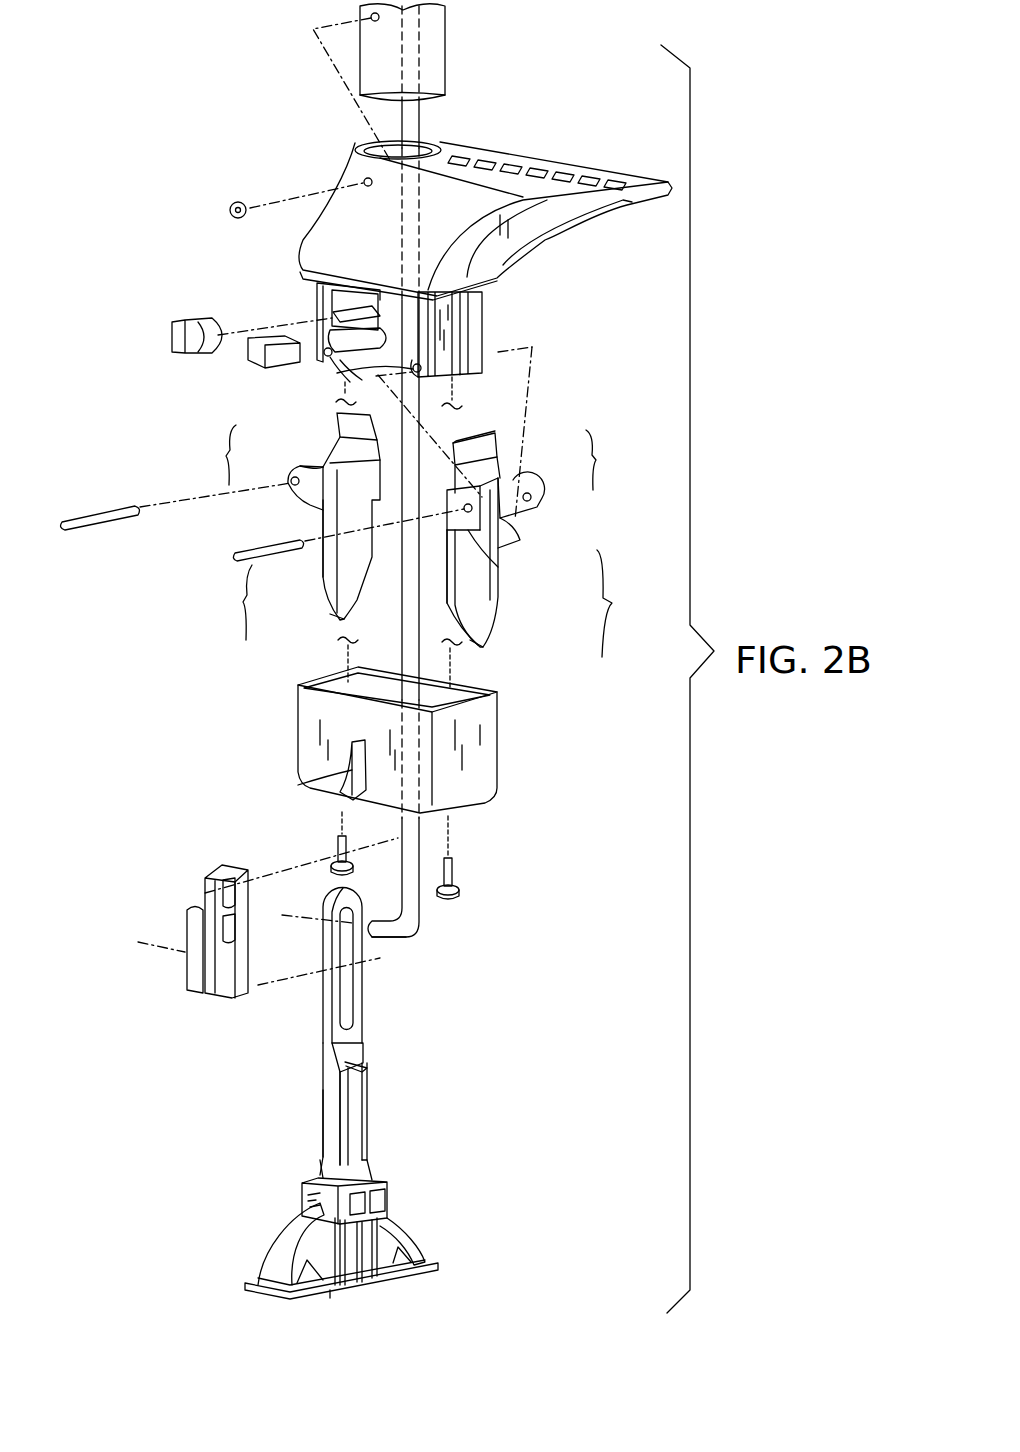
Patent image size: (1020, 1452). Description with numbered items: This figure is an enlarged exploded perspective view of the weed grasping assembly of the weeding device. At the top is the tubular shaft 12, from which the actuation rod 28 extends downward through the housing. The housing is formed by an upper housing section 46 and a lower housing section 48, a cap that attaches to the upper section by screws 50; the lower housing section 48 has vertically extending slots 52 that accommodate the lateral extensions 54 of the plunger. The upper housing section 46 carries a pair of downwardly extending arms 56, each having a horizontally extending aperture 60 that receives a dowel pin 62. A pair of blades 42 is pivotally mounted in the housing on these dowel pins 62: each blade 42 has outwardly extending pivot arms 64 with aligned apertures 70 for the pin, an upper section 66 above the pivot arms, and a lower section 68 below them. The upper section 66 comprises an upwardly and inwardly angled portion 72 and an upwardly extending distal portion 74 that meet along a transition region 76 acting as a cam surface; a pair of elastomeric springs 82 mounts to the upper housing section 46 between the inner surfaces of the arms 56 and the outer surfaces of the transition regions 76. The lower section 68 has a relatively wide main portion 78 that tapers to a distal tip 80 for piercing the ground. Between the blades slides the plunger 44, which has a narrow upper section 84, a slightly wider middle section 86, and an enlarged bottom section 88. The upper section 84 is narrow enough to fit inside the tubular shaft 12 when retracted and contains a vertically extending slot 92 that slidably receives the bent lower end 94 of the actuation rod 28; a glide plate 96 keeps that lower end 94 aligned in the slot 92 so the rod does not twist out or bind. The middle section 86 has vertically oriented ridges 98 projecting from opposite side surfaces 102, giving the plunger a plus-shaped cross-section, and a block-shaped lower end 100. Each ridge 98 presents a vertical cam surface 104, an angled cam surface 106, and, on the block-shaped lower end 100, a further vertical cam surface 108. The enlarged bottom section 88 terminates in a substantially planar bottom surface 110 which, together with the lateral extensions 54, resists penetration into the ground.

The tubular shaft 12 is at (445, 40).
The actuation rod 28 is at (422, 128).
The upper housing section 46 is at (555, 232).
The downwardly extending arm 56 is at (317, 300).
The horizontally extending aperture 60 is at (340, 368).
The elastomeric spring 82 is at (178, 322).
The transition region 76 is at (380, 423).
The upwardly extending distal portion 74 is at (337, 420).
The upwardly and inwardly angled extending portion 72 is at (323, 463).
The upper section 66 is at (416, 456).
The pivot arm 64 is at (303, 505).
The aligned aperture 70 is at (290, 488).
The dowel pin 62 is at (102, 512).
The blade 42 is at (372, 556).
The main portion 78 is at (327, 568).
The distal tip 80 is at (338, 621).
The lower section 68 is at (430, 603).
The lower housing section 48 is at (498, 755).
The vertically extending slot 52 is at (312, 787).
The screw 50 is at (335, 845).
The glide plate 96 is at (203, 992).
The upper section 84 is at (362, 975).
The vertically extending slot 92 is at (355, 1022).
The bent lower end 94 is at (375, 938).
The vertically extending cam surface 104 is at (370, 1072).
The middle section 86 is at (323, 1092).
The plunger 44 is at (314, 1127).
The vertically oriented ridge 98 is at (368, 1118).
The side surface 102 is at (340, 1145).
The angled cam surface 106 is at (320, 1163).
The block-shaped lower end 100 is at (302, 1200).
The cam surface 108 is at (385, 1200).
The enlarged bottom section 88 is at (437, 1257).
The lateral extension 54 is at (272, 1258).
The planar bottom surface 110 is at (371, 1286).